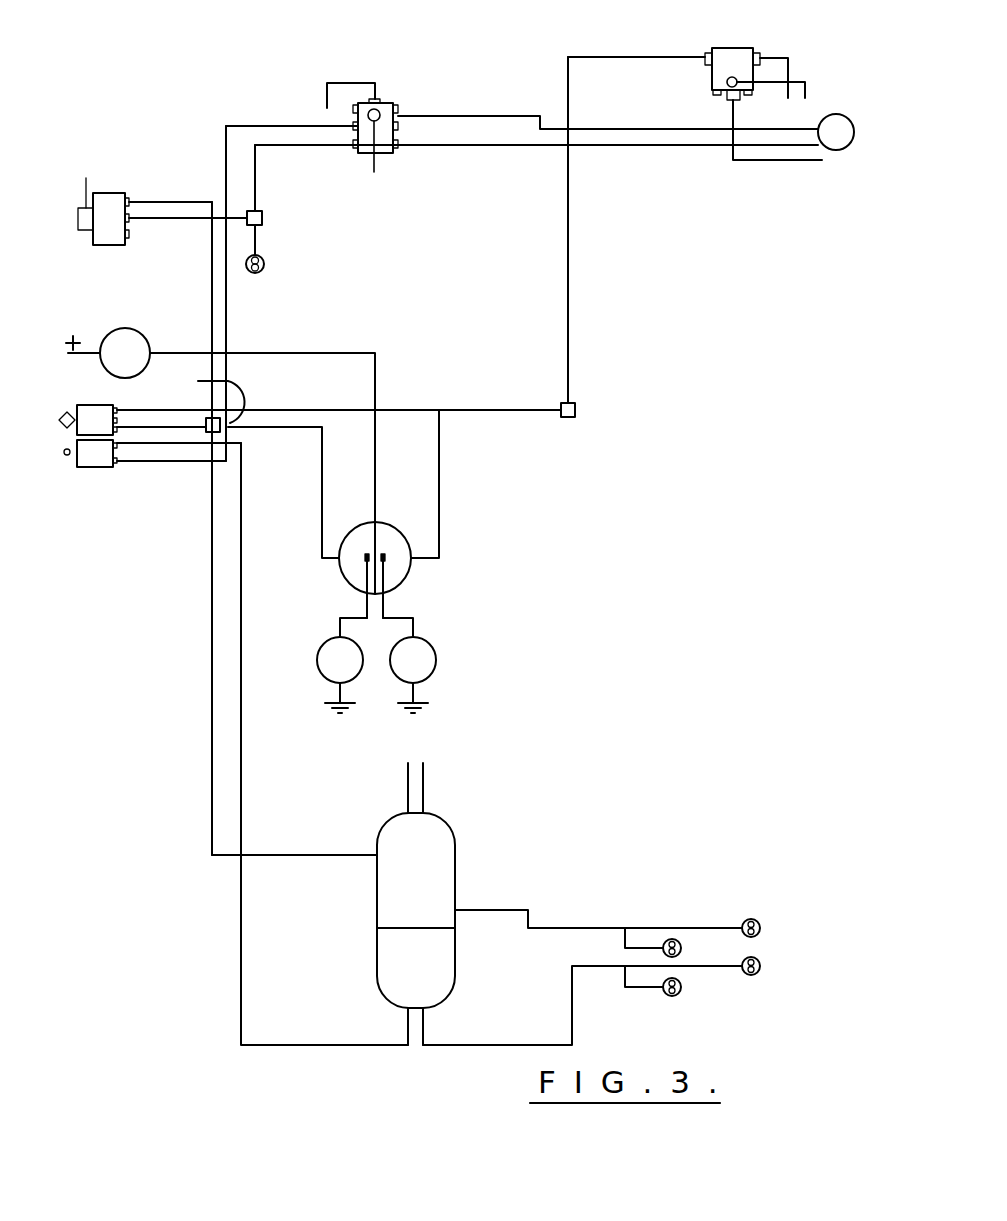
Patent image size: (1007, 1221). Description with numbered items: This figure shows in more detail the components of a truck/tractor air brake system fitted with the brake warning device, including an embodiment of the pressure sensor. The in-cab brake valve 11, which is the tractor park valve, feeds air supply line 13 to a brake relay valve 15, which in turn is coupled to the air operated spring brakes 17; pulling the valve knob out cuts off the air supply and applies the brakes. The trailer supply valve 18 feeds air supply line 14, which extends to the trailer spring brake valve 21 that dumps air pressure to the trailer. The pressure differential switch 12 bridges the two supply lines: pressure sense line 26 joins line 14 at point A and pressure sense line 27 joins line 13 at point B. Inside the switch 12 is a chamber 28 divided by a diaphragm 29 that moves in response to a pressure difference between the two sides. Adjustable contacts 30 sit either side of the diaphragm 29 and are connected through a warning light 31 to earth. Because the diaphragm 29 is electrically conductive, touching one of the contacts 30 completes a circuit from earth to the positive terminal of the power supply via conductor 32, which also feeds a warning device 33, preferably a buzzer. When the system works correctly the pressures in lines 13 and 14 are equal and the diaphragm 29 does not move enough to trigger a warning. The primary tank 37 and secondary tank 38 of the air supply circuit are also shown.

The in-cab brake valve 11 is at (83, 418).
The pressure differential switch 12 is at (416, 577).
The air supply line 13 is at (228, 325).
The air supply line 14 is at (517, 413).
The brake relay valve 15 is at (383, 102).
The spring brakes 17 is at (839, 132).
The trailer supply valve 18 is at (95, 457).
The trailer spring brake valve 21 is at (725, 60).
The pressure sense line 26 is at (441, 471).
The pressure sense line 27 is at (322, 470).
The chamber 28 is at (390, 540).
The diaphragm 29 is at (372, 543).
The contacts 30 is at (363, 560).
The warning light 31 is at (360, 652).
The conductor 32 is at (325, 355).
The warning device 33 is at (133, 347).
The primary tank 37 is at (430, 850).
The secondary tank 38 is at (393, 972).
The connection point A is at (439, 410).
The connection point B is at (208, 393).